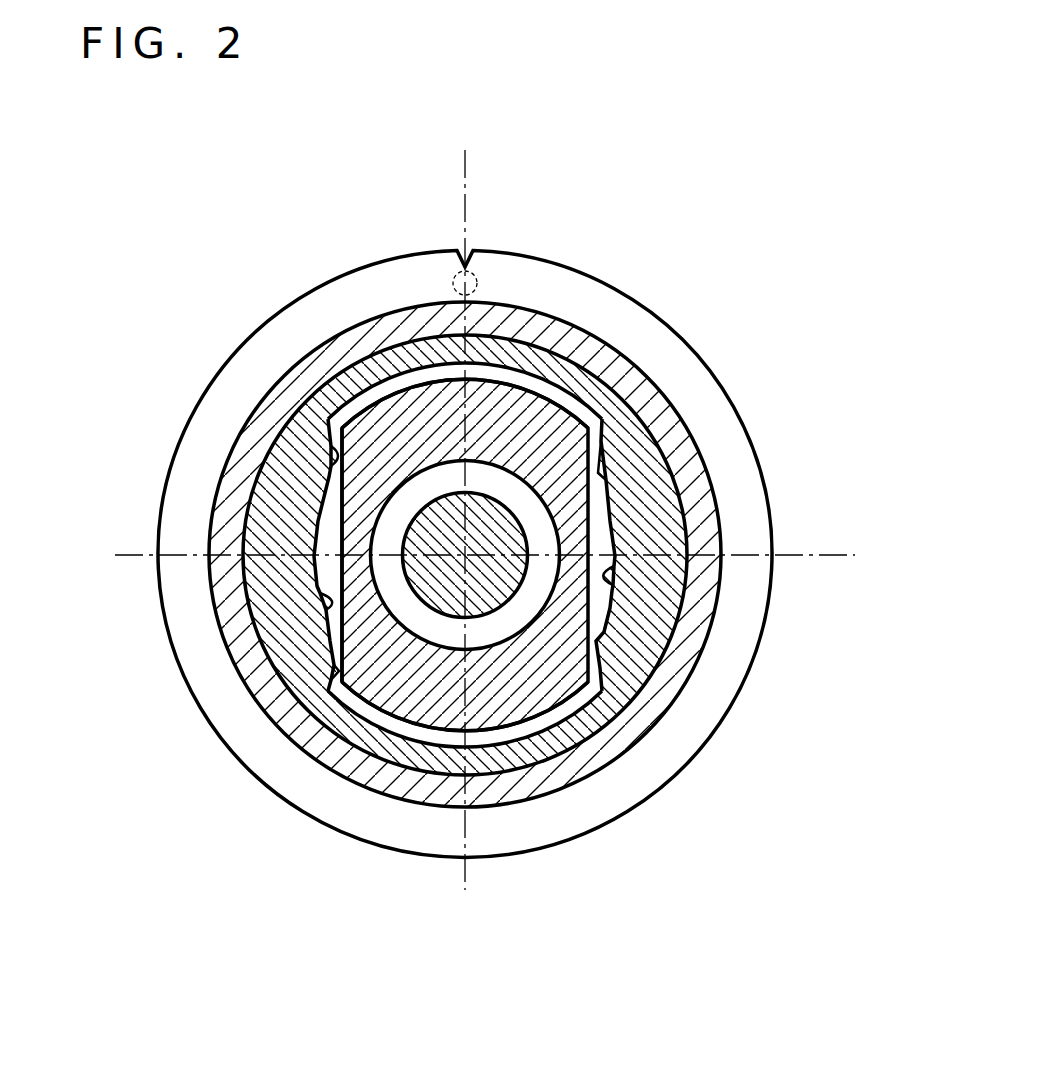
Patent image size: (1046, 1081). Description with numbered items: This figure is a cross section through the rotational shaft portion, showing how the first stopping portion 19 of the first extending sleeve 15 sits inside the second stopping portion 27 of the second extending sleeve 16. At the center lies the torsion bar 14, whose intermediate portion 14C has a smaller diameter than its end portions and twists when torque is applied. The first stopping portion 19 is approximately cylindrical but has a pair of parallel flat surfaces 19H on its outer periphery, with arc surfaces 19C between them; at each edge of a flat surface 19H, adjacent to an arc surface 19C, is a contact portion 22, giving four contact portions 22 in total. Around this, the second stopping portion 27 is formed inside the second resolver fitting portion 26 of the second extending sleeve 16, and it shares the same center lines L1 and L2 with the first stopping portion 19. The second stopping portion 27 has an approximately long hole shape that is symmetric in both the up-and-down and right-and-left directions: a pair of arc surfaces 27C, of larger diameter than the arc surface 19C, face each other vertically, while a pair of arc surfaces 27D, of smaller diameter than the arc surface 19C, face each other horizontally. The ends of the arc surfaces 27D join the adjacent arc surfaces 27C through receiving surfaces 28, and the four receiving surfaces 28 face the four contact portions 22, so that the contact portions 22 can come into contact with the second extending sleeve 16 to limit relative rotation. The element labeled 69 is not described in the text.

The torsion bar 14 is at (398, 571).
The intermediate portion 14C is at (465, 555).
The first extending sleeve 15 is at (325, 512).
The second extending sleeve 16 is at (273, 423).
The first stopping portion 19 is at (355, 710).
The arc surfaces 19C is at (487, 368).
The flat surfaces 19H is at (330, 517).
The contact portions 22 is at (297, 425).
The second resolver fitting portion 26 is at (495, 785).
The second stopping portion 27 is at (372, 704).
The arc surfaces 27C is at (540, 392).
The arc surfaces 27D is at (330, 628).
The receiving surfaces 28 is at (330, 452).
The inner peripheral surface 69 is at (268, 705).
The center line L1 is at (833, 557).
The center line L2 is at (465, 182).